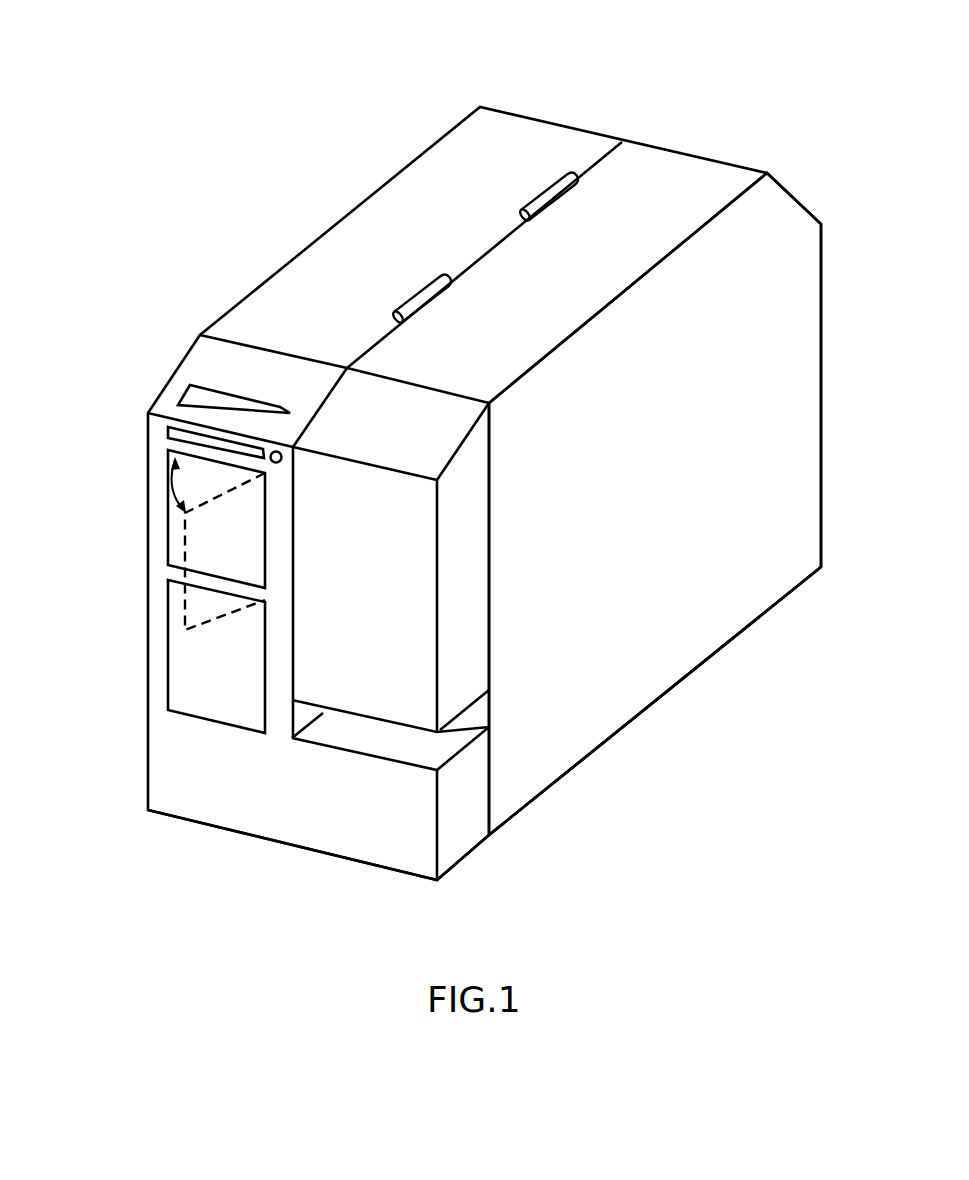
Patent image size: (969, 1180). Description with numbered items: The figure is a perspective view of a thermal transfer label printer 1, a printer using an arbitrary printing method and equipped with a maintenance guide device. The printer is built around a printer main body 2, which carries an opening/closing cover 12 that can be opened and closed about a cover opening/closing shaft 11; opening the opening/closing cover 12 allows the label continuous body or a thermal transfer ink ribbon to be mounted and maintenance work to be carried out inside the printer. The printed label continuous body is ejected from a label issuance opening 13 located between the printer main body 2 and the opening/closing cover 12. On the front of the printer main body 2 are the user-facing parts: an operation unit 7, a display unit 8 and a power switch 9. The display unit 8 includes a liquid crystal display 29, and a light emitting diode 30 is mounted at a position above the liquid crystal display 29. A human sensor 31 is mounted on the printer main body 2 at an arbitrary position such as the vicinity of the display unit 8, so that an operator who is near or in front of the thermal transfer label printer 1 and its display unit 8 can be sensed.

The thermal transfer label printer 1 is at (313, 148).
The printer main body 2 is at (273, 846).
The operation unit 7 is at (158, 649).
The display unit 8 is at (158, 512).
The power switch 9 is at (187, 400).
The cover opening/closing shaft 11 is at (423, 297).
The opening/closing cover 12 is at (823, 397).
The label issuance opening 13 is at (432, 745).
The liquid crystal display 29 is at (166, 543).
The light emitting diode 30 is at (167, 431).
The human sensor 31 is at (275, 450).